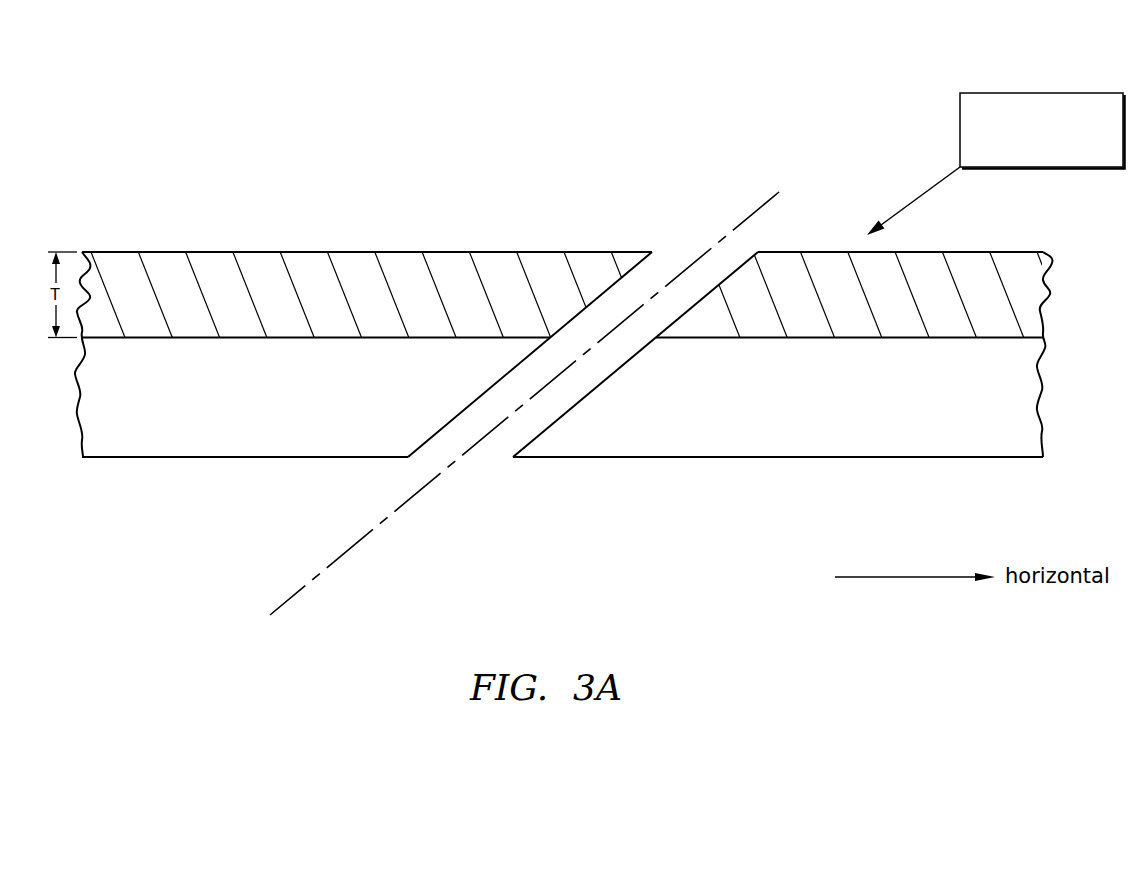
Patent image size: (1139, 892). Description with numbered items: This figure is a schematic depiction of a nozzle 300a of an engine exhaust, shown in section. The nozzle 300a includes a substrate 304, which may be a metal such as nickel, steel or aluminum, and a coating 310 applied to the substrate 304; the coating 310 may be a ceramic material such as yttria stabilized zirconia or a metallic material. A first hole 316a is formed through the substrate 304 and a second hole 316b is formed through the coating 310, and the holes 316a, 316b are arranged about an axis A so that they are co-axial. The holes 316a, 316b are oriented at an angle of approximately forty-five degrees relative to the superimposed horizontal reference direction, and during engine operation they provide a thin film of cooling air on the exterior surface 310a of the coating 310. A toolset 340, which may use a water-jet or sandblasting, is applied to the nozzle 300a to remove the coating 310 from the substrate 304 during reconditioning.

The nozzle 300a is at (778, 111).
The coating 310 is at (290, 283).
The exterior/outer surface of the coating 310a is at (382, 252).
The substrate 304 is at (710, 438).
The first hole 316a is at (437, 446).
The second hole 316b is at (655, 272).
The toolset 340 is at (1062, 156).
The axis A is at (283, 604).